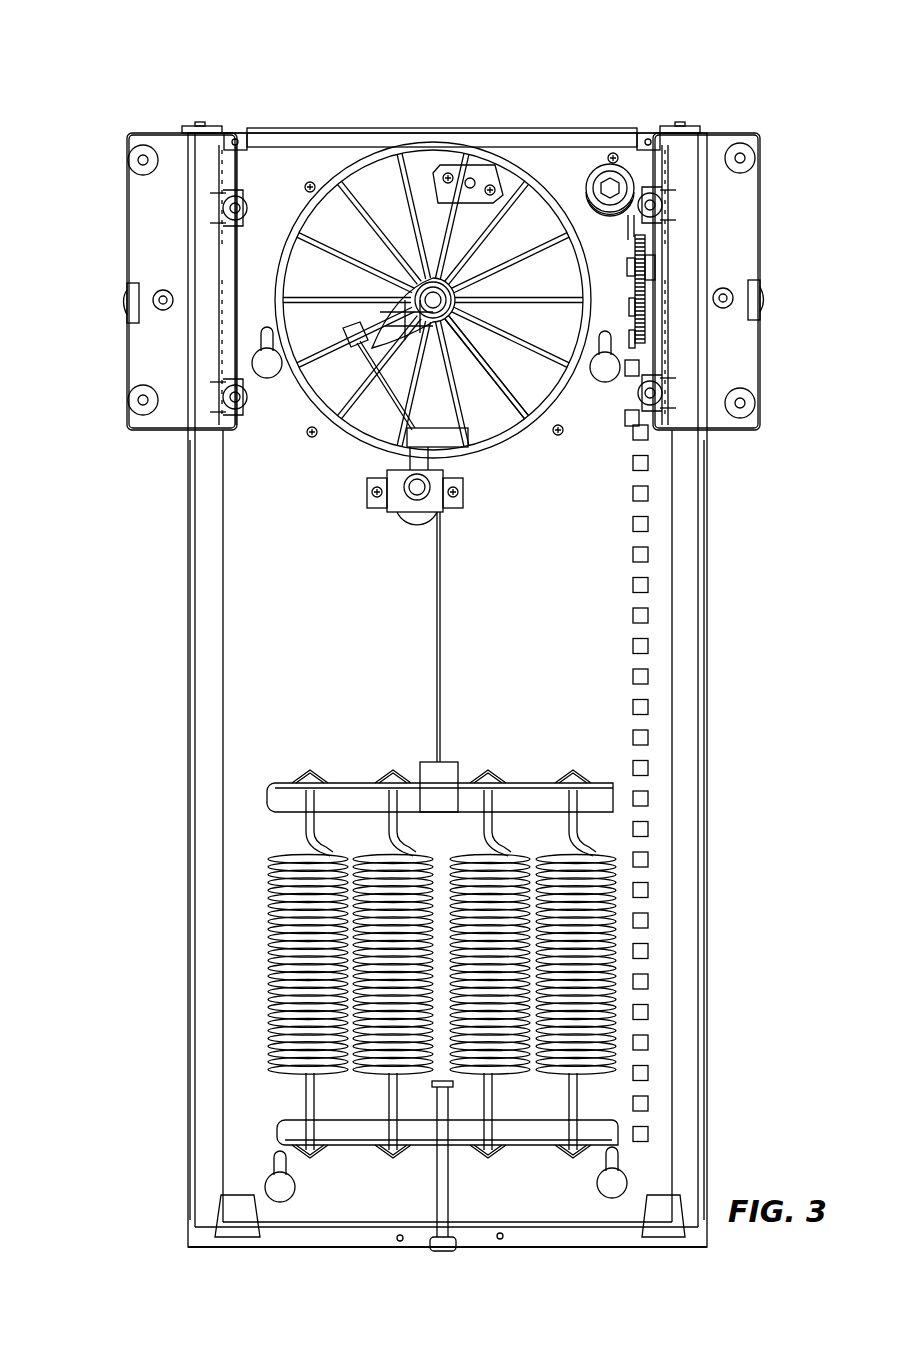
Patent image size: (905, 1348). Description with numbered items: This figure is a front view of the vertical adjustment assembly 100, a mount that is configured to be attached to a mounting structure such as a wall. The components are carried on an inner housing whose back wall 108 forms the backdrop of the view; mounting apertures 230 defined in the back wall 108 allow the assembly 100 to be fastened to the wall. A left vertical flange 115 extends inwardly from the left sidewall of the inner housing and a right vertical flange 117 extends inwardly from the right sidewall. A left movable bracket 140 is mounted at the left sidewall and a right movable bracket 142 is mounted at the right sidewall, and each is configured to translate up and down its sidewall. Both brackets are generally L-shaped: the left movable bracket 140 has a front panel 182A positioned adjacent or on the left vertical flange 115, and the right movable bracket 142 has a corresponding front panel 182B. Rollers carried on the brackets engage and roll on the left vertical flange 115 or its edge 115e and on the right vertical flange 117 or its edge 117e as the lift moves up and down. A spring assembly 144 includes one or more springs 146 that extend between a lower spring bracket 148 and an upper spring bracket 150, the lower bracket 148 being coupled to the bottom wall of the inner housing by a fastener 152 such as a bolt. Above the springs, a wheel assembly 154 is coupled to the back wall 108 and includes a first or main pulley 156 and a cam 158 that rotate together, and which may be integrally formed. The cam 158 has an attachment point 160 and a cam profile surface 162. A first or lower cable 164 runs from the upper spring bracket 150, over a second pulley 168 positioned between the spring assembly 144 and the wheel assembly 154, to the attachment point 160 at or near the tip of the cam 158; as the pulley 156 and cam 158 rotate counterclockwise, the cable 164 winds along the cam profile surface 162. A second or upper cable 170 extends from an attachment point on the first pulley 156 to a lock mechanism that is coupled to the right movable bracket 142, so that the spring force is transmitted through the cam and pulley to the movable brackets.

The vertical adjustment assembly 100 is at (700, 63).
The back wall 108 is at (580, 505).
The left vertical flange 115 is at (188, 458).
The edge of left vertical flange 115e is at (225, 522).
The right vertical flange 117 is at (690, 615).
The edge of right vertical flange 117e is at (648, 575).
The left movable bracket 140 is at (175, 112).
The right movable bracket 142 is at (725, 115).
The spring assembly 144 is at (364, 970).
The springs 146 is at (275, 895).
The lower spring bracket 148 is at (532, 1130).
The upper spring bracket 150 is at (548, 790).
The fastener 152 is at (436, 1184).
The wheel assembly 154 is at (287, 168).
The first pulley 156 is at (382, 150).
The cam 158 is at (400, 290).
The attachment point 160 is at (355, 326).
The cam profile surface 162 is at (450, 363).
The first cable 164 is at (436, 620).
The second pulley 168 is at (412, 515).
The second cable 170 is at (565, 165).
The front panel 182A is at (130, 250).
The front panel 182B is at (750, 245).
The mounting apertures 230 is at (272, 1190).